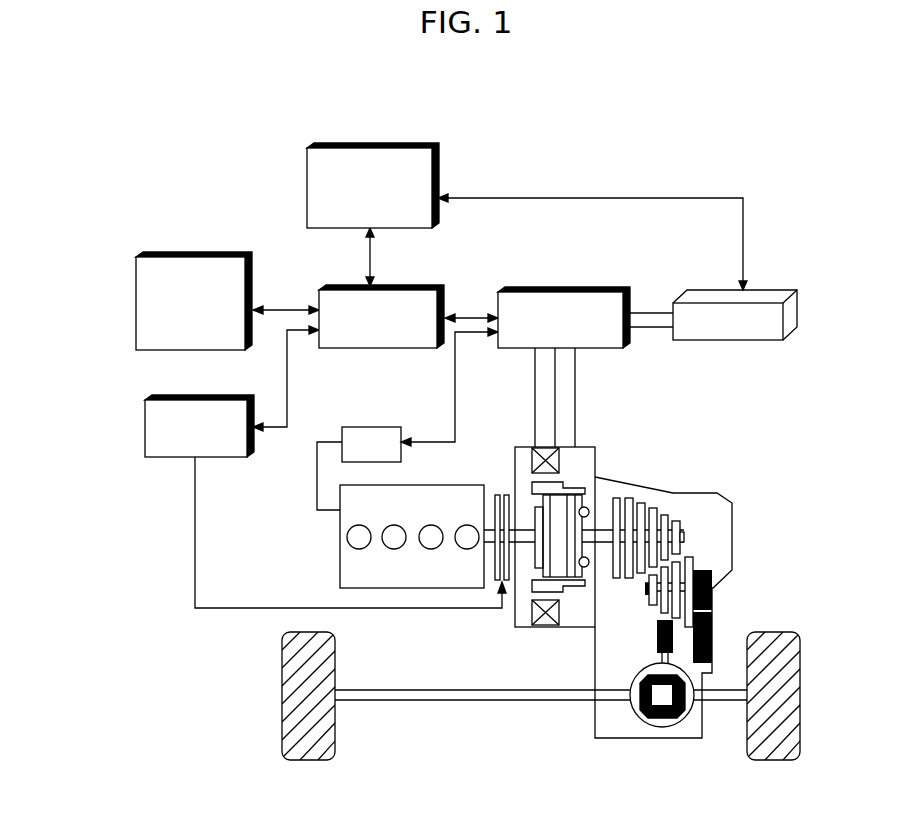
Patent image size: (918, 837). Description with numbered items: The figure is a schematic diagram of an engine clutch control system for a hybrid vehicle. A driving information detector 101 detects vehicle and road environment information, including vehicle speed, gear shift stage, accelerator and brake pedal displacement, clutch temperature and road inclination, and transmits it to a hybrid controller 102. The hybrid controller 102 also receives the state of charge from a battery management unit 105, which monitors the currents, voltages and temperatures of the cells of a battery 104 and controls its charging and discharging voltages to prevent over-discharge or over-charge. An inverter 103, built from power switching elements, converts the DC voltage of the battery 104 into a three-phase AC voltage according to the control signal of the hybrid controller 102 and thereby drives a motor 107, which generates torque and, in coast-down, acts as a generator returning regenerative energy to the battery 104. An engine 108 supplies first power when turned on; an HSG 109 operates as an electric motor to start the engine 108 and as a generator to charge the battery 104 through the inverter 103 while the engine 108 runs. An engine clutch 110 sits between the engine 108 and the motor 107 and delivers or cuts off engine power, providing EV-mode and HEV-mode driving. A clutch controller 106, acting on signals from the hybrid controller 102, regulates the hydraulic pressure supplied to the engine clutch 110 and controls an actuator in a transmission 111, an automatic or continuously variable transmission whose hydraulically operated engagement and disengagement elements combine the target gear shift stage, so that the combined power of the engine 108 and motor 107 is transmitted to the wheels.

The driving information detector 101 is at (136, 317).
The hybrid controller 102 is at (420, 285).
The inverter 103 is at (580, 286).
The battery 104 is at (787, 289).
The battery management unit 105 is at (404, 143).
The clutch controller 106 is at (145, 425).
The motor 107 is at (583, 460).
The engine 108 is at (345, 560).
The HSG (Hybrid Starter and Generator) 109 is at (370, 427).
The engine clutch 110 is at (494, 495).
The transmission 111 is at (703, 493).